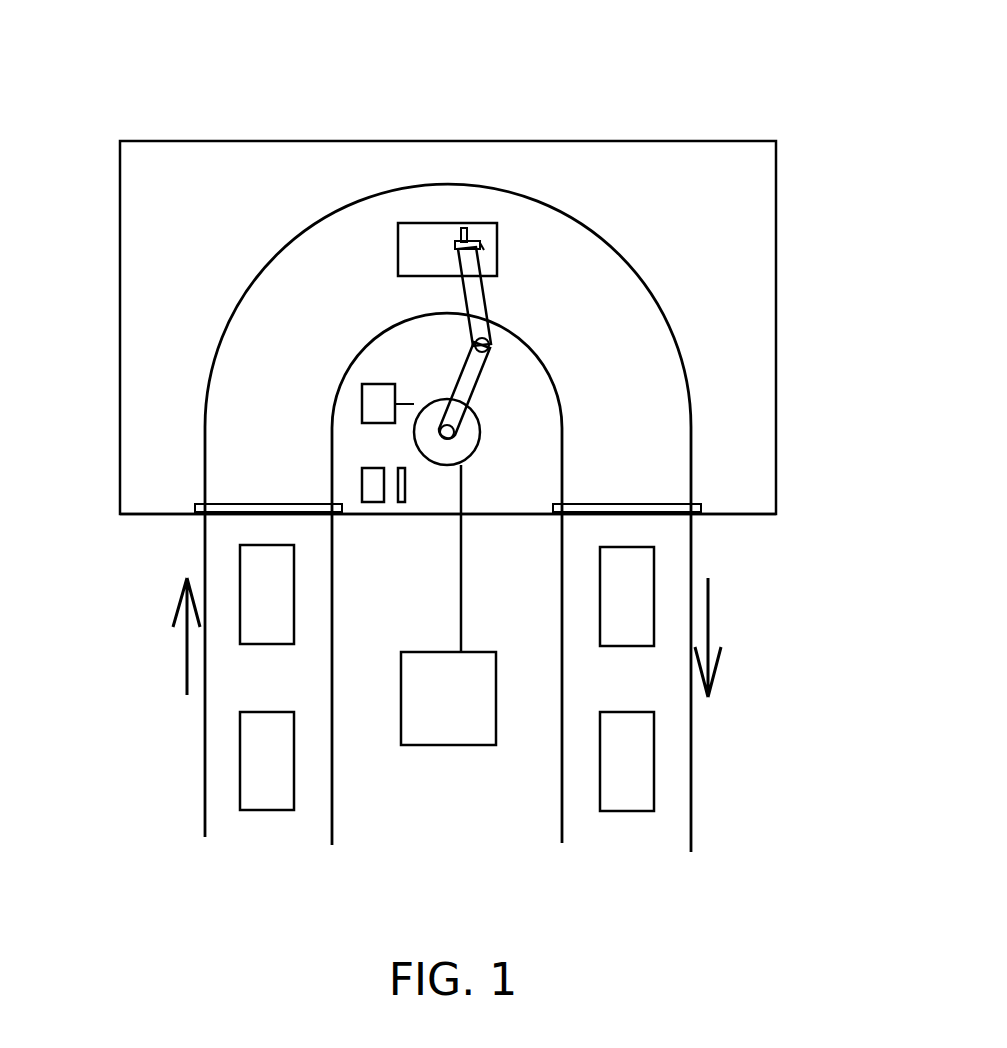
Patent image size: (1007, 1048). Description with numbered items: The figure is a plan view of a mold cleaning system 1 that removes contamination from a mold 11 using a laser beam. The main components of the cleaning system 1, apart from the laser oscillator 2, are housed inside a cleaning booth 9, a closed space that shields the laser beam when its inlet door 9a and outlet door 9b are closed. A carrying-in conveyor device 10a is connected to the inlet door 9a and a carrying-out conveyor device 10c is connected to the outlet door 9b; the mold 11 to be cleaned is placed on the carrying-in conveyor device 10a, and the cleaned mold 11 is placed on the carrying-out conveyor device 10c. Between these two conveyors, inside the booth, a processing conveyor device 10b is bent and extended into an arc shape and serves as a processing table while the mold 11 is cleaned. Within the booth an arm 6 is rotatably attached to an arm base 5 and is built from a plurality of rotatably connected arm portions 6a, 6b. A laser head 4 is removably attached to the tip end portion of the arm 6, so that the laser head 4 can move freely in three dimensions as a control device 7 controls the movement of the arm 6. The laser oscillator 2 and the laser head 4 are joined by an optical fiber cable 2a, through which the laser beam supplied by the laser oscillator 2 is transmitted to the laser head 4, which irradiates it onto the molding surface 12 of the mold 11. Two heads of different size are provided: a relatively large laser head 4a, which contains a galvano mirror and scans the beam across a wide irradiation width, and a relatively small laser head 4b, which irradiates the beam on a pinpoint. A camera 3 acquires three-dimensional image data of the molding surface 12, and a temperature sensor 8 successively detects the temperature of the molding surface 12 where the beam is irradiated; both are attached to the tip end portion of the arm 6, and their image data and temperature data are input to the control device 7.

The mold cleaning system 1 is at (631, 97).
The laser oscillator 2 is at (452, 747).
The optical fiber cable 2a is at (464, 502).
The camera 3 is at (457, 244).
The laser head 4 is at (433, 401).
The relatively large laser head 4a is at (370, 504).
The relatively small laser head 4b is at (402, 504).
The arm base 5 is at (471, 437).
The arm 6 is at (524, 342).
The arm portion 6a is at (490, 298).
The arm portion 6b is at (488, 378).
The control device 7 is at (372, 385).
The temperature sensor 8 is at (482, 251).
The cleaning booth 9 is at (154, 535).
The inlet door 9a is at (258, 506).
The outlet door 9b is at (632, 506).
The carrying-in conveyor device 10a is at (212, 746).
The processing conveyor device 10b is at (257, 301).
The carrying-out conveyor device 10c is at (680, 745).
The mold 11 is at (385, 246).
The molding surface 12 is at (420, 262).